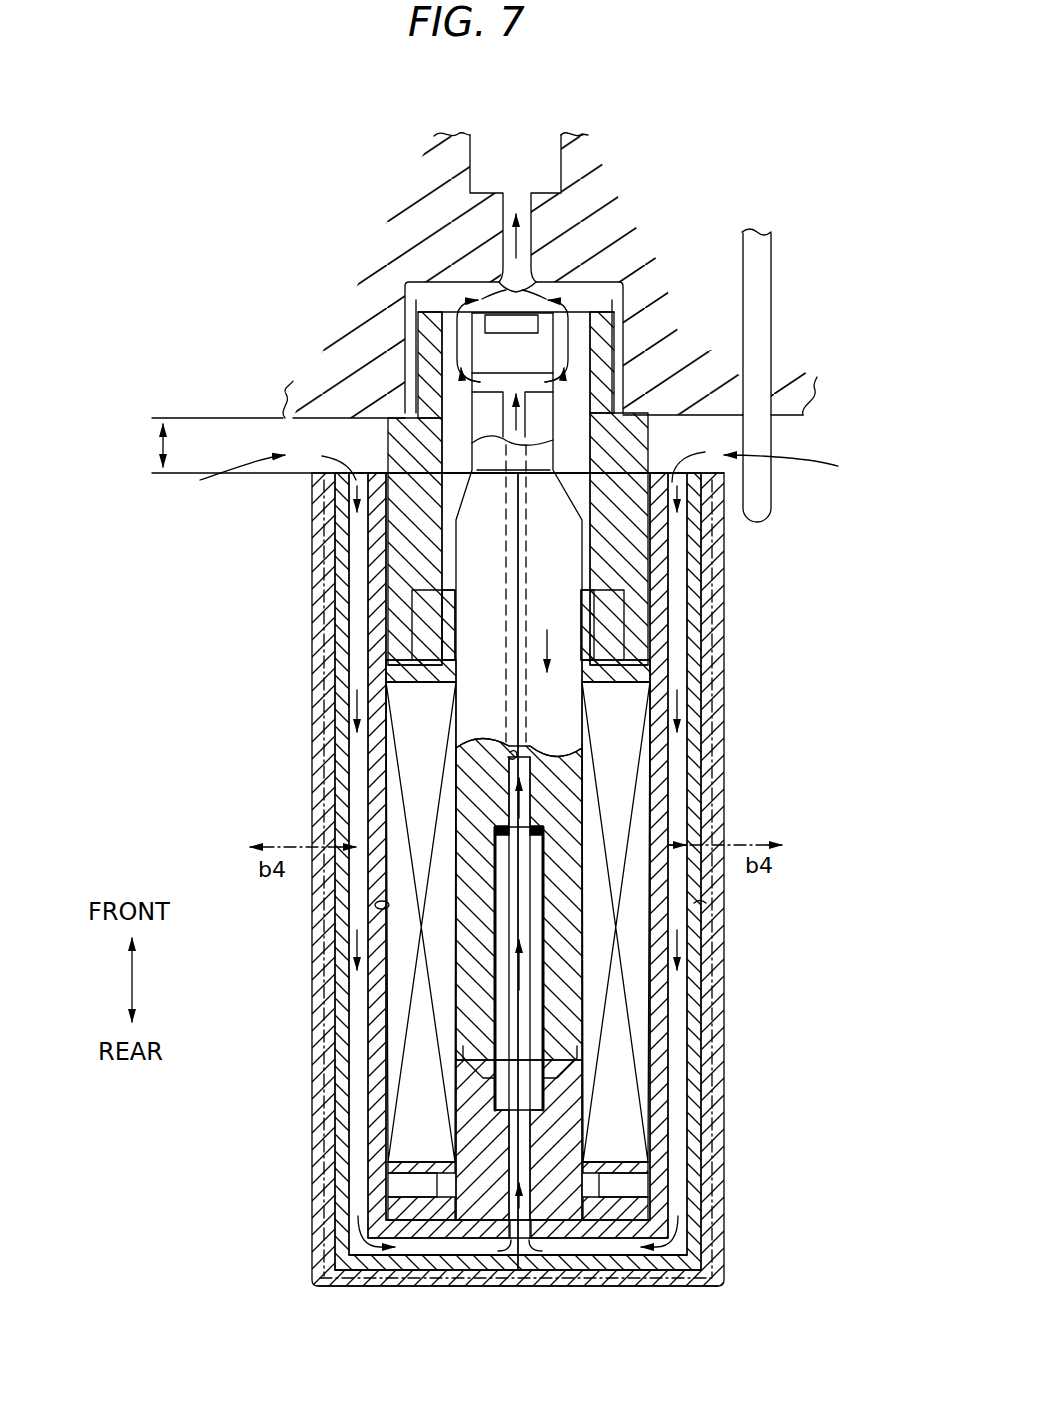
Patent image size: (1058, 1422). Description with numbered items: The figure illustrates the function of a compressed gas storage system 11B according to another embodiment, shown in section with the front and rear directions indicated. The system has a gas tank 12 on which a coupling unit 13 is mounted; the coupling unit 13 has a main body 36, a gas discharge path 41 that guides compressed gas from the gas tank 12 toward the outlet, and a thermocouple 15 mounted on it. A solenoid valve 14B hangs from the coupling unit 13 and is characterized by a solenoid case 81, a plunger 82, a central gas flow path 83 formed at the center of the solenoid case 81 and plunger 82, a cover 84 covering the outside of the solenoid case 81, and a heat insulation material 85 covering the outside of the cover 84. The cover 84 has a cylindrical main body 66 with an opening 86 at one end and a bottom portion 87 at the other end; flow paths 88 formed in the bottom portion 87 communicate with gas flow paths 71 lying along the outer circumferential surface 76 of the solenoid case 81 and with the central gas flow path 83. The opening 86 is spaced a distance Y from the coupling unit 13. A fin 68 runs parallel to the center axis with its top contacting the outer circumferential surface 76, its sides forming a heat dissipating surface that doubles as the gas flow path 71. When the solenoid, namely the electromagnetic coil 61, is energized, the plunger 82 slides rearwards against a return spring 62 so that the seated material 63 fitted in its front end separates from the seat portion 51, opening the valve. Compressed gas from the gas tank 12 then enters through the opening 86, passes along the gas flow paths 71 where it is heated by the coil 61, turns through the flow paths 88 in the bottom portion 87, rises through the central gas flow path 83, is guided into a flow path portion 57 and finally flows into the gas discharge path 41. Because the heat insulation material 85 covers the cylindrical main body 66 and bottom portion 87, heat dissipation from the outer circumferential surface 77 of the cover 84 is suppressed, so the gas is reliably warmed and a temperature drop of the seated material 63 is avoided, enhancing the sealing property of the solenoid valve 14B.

The compressed gas storage system 11B is at (228, 210).
The gas tank 12 is at (228, 337).
The coupling unit 13 is at (268, 398).
The main body 36 is at (302, 433).
The gas discharge path 41 is at (476, 172).
The seat portion 51 is at (584, 282).
The flow path portion 57 is at (440, 388).
The seated material 63 is at (497, 313).
The opening 86 is at (310, 398).
The thermocouple 15 is at (773, 503).
The solenoid valve 14B is at (251, 688).
The plunger 82 is at (430, 616).
The solenoid case 81 is at (372, 750).
The central gas flow path 83 is at (511, 754).
The return spring 62 is at (500, 824).
The outer circumferential surface 76 is at (345, 822).
The fin 68 is at (380, 905).
The cover 84 is at (342, 950).
The heat insulation material 85 is at (725, 742).
The outer circumferential surface 77 is at (703, 800).
The cylindrical main body 66 is at (700, 903).
The gas flow path 71 is at (358, 1040).
The electromagnetic coil 61 is at (620, 1064).
The bottom portion 87 is at (424, 1271).
The flow path 88 is at (464, 1252).